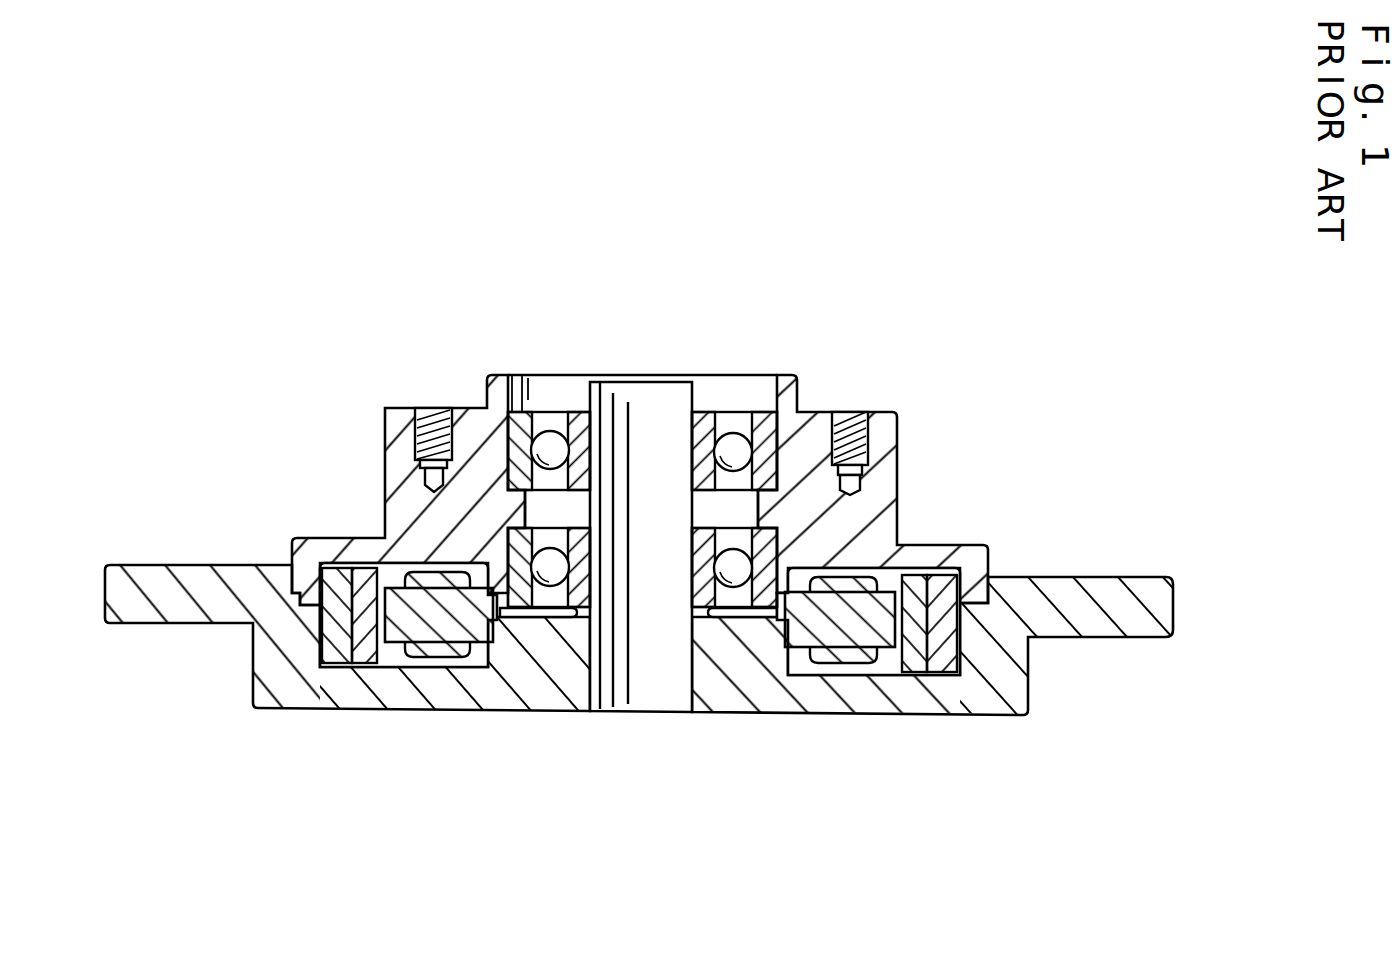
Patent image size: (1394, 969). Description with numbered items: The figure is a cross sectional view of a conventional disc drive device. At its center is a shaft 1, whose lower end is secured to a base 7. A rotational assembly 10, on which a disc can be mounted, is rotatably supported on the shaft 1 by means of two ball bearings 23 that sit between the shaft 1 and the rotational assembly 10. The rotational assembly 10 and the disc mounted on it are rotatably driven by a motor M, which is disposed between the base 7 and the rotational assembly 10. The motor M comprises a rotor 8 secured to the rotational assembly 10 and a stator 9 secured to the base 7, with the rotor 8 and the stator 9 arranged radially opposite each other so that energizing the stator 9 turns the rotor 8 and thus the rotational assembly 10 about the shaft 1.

The shaft 1 is at (637, 417).
The base 7 is at (1097, 627).
The rotor 8 is at (343, 645).
The stator 9 is at (442, 615).
The rotational assembly 10 is at (880, 502).
The ball bearings 23 is at (763, 422).
The motor M is at (405, 790).